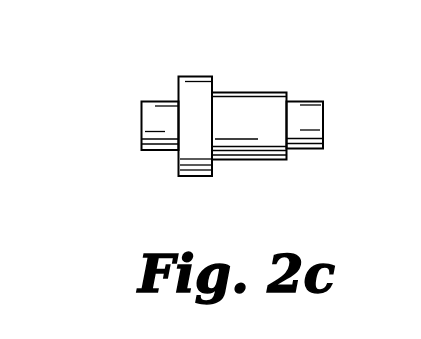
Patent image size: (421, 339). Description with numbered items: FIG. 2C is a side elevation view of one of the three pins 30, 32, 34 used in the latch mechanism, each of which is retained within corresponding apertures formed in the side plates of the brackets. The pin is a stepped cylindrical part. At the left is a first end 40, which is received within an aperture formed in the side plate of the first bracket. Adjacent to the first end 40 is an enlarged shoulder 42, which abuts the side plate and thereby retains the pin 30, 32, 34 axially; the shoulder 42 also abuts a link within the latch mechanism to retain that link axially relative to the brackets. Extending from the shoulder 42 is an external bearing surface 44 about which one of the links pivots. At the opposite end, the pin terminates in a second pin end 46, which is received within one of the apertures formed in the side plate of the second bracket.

The pin 30 is at (194, 64).
The pin 32 is at (194, 64).
The pin 34 is at (194, 64).
The first end 40 is at (150, 150).
The shoulder 42 is at (198, 176).
The external bearing surface 44 is at (255, 92).
The second pin end 46 is at (302, 149).